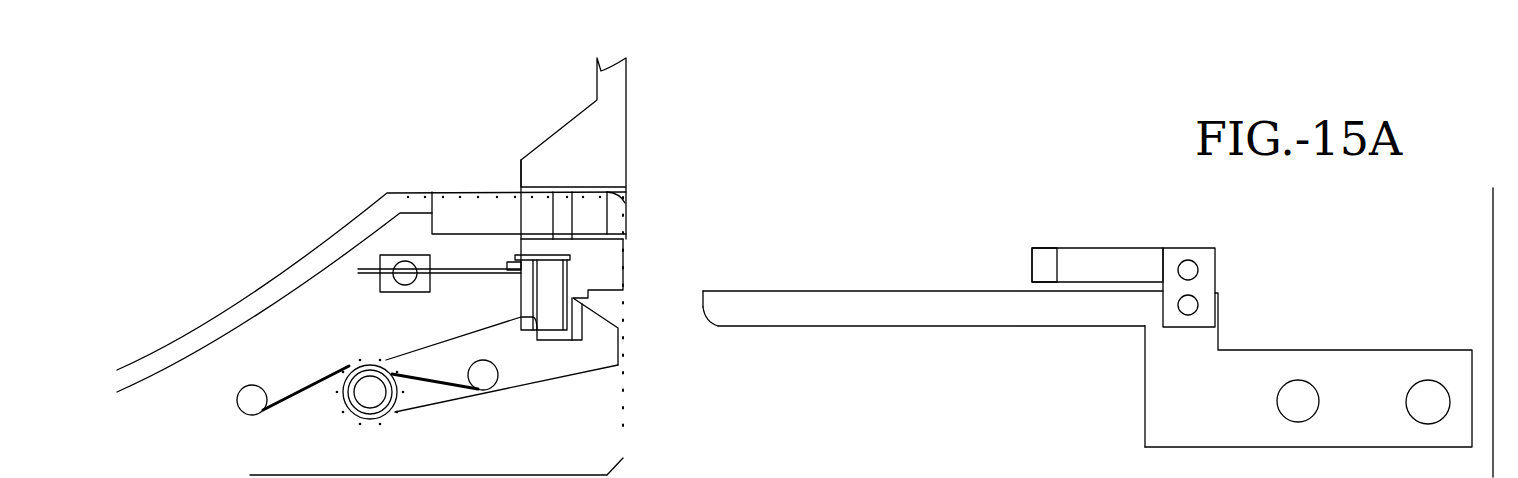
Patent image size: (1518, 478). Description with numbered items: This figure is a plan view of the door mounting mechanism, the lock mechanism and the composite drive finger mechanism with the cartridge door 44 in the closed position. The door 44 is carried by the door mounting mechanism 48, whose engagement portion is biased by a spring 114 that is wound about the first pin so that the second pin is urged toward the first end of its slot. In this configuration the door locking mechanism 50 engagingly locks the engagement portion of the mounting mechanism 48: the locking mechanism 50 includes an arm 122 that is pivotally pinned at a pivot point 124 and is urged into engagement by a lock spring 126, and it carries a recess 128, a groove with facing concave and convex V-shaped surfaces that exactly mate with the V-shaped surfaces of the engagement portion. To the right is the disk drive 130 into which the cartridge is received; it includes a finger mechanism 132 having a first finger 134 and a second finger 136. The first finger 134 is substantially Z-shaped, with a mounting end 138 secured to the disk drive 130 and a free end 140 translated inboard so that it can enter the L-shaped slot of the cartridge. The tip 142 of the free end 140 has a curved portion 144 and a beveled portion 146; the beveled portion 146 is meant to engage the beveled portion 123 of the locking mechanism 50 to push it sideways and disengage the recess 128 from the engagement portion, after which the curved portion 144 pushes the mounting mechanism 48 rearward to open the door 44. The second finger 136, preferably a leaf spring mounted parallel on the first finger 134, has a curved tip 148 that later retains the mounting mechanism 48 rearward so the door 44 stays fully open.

The cartridge door 44 is at (613, 147).
The spring 114 is at (460, 268).
The beveled portion 123 is at (607, 318).
The recess 128 is at (572, 298).
The door mounting mechanism 48 is at (494, 300).
The door locking mechanism 50 is at (388, 340).
The lock spring 126 is at (303, 397).
The pivot point 124 is at (358, 417).
The arm 122 is at (447, 402).
The tip 142 is at (703, 291).
The curved portion 144 is at (700, 299).
The beveled portion 146 is at (703, 307).
The free end 140 is at (980, 328).
The curved tip 148 is at (1032, 267).
The second finger 136 is at (1104, 248).
The finger mechanism 132 is at (1266, 250).
The first finger 134 is at (1145, 392).
The mounting end 138 is at (1350, 350).
The disk drive 130 is at (1492, 257).